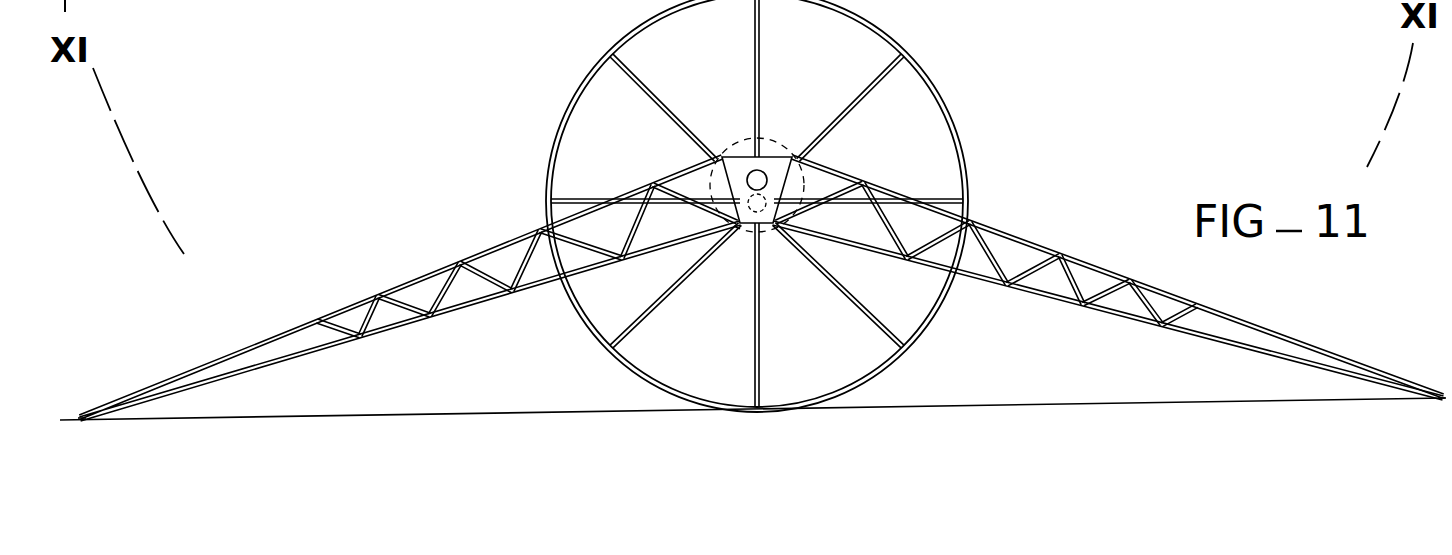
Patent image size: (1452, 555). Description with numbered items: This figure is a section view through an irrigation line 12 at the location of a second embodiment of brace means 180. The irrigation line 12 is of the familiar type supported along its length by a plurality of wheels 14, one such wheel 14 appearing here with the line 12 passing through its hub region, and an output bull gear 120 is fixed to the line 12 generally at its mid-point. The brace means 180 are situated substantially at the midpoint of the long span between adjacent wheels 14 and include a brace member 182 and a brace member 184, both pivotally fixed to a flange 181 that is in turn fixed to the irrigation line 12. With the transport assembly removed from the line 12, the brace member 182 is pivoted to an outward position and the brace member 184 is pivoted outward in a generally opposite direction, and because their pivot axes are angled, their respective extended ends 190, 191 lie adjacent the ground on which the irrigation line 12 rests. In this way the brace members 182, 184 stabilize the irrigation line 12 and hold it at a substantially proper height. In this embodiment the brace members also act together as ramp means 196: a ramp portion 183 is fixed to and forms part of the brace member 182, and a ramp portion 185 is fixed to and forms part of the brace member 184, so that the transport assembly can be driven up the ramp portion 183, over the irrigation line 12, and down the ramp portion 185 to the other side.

The irrigation line 12 is at (768, 170).
The wheel 14 is at (567, 107).
The output bull gear 120 is at (791, 146).
The brace means 180 is at (373, 295).
The flange 181 is at (740, 168).
The brace member 182 is at (496, 298).
The ramp portion 183 is at (440, 266).
The brace member 184 is at (1069, 303).
The ramp portion 185 is at (1100, 270).
The extended end 190 is at (81, 415).
The extended end 191 is at (1444, 396).
The ramp means 196 is at (226, 356).